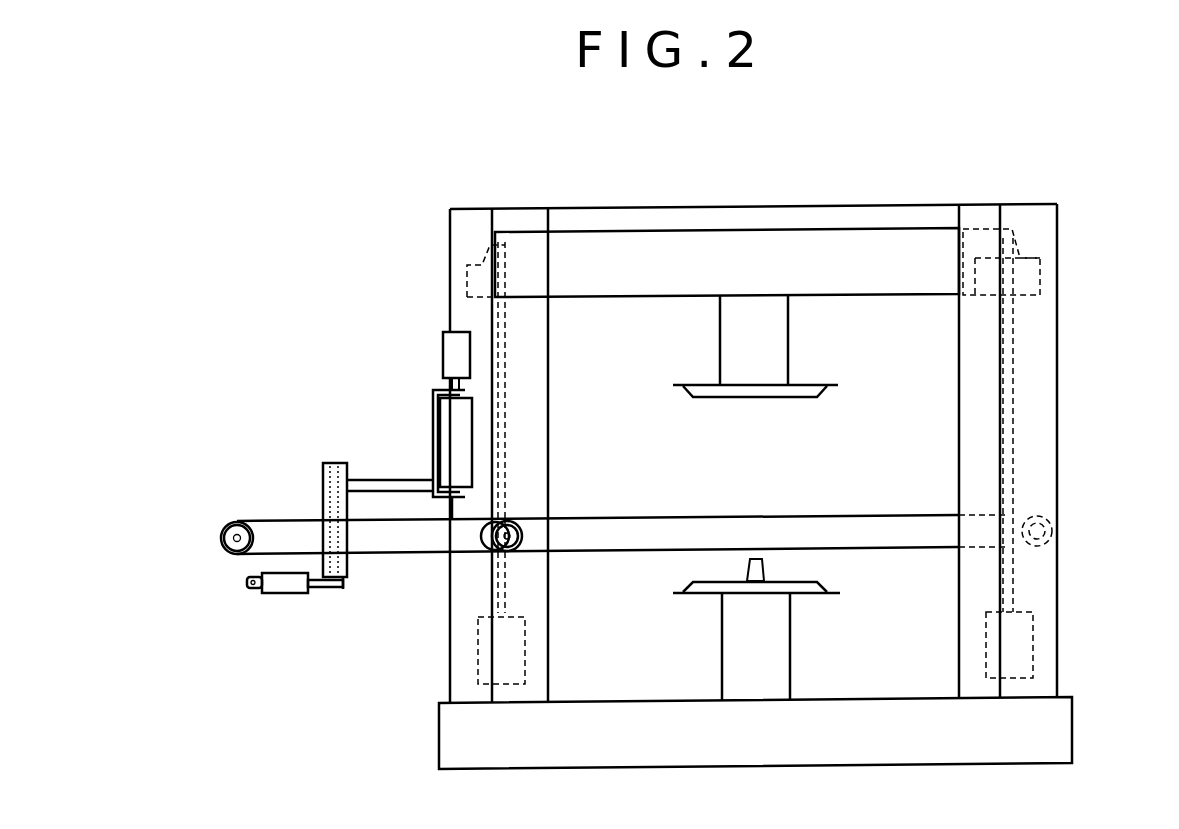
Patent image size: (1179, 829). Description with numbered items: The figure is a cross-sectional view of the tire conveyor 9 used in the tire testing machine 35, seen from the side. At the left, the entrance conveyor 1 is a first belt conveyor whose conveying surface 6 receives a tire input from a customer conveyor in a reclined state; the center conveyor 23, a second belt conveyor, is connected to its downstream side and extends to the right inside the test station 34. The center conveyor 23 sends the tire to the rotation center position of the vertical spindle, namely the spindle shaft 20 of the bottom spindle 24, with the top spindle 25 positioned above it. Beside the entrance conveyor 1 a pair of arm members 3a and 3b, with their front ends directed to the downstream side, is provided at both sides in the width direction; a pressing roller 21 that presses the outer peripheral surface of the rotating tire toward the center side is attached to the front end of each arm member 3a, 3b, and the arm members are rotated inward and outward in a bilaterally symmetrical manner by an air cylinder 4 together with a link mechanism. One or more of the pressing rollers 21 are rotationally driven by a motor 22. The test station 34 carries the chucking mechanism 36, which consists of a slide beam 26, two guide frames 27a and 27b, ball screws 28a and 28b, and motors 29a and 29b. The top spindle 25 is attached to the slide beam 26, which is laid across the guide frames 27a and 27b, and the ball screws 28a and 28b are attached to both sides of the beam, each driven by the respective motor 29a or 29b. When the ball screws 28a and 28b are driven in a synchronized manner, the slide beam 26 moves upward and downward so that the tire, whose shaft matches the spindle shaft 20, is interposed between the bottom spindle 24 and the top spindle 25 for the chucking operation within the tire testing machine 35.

The entrance conveyor 1 is at (262, 527).
The conveying surface 6 is at (299, 524).
The tire conveyor 9 is at (212, 550).
The air cylinder 4 is at (288, 588).
The arm member 3a is at (378, 494).
The arm member 3b is at (388, 482).
The pressing roller 21 is at (457, 430).
The motor 22 is at (443, 350).
The ball screw 28a is at (495, 303).
The ball screw 28b is at (1010, 326).
The motor 29a is at (478, 650).
The motor 29b is at (1035, 645).
The guide frame 27a is at (468, 218).
The guide frame 27b is at (1030, 215).
The slide beam 26 is at (868, 240).
The top spindle 25 is at (775, 340).
The bottom spindle 24 is at (780, 645).
The center conveyor 23 is at (880, 532).
The spindle shaft 20 is at (770, 567).
The test station 34 is at (758, 192).
The tire testing machine 35 is at (307, 283).
The chucking mechanism 36 is at (1085, 450).